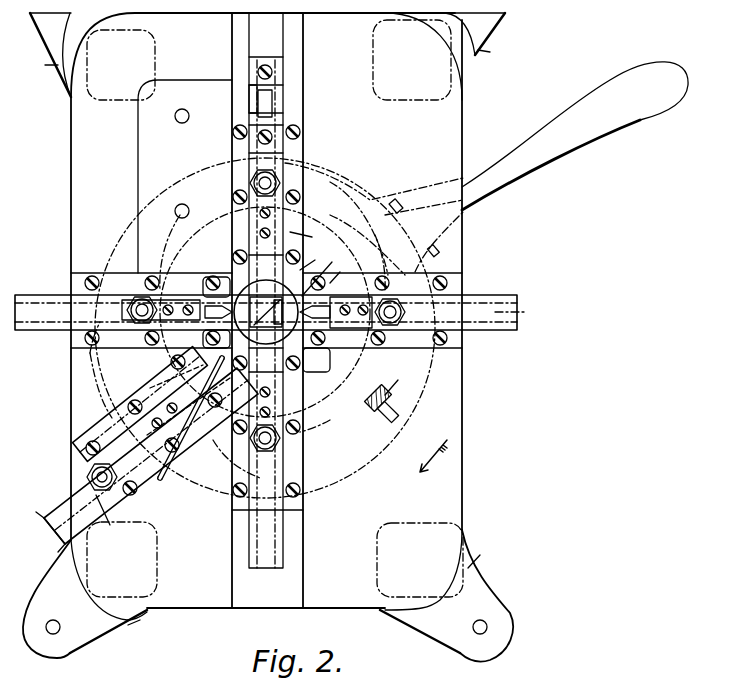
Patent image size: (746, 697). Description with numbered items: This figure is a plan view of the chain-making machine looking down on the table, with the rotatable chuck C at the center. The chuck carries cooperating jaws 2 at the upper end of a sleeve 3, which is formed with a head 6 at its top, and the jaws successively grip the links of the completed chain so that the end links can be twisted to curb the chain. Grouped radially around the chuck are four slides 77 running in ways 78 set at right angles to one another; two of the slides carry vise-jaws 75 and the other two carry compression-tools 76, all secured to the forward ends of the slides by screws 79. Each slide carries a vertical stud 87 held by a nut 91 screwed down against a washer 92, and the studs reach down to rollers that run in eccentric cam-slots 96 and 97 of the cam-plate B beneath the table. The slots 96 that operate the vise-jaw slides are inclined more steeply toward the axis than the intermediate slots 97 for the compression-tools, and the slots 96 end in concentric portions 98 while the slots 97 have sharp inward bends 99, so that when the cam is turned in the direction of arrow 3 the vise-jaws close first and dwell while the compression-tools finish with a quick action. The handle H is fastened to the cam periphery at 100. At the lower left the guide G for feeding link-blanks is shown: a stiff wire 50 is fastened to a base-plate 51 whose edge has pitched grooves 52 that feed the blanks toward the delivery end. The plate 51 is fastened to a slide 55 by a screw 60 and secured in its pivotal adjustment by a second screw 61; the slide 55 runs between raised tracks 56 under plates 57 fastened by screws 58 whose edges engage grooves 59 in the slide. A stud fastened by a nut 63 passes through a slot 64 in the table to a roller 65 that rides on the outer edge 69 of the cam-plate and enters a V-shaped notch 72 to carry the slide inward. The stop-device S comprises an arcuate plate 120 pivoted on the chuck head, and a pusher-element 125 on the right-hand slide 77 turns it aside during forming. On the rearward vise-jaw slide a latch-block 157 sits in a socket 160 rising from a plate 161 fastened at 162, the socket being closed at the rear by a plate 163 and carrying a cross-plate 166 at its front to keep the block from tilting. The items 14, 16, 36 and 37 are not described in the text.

The chuck-jaws 2 is at (266, 311).
The sleeve 3 is at (433, 456).
The head 6 is at (218, 303).
The guide block 14 is at (214, 301).
The pointed slide piece 16 is at (300, 314).
The hatched block 36 is at (392, 402).
The block plate 37 is at (388, 418).
The wire 50 is at (168, 470).
The base-plate 51 is at (180, 360).
The grooves 52 is at (160, 370).
The slide 55 is at (48, 531).
The tracks 56 is at (165, 500).
The plates 57 is at (168, 482).
The screws 58 is at (130, 496).
The grooves 59 is at (58, 552).
The screw 60 is at (150, 432).
The second screw 61 is at (88, 474).
The nut 63 is at (92, 482).
The slot 64 is at (171, 389).
The roller 65 is at (107, 518).
The outer edge 69 is at (92, 372).
The V-shaped notch 72 is at (125, 425).
The vise-jaws 75 is at (256, 290).
The compression-tools 76 is at (348, 303).
The slides 77 is at (30, 312).
The ways 78 is at (293, 590).
The screws 79 is at (272, 370).
The studs 87 is at (265, 450).
The nuts 91 is at (278, 445).
The washers 92 is at (280, 445).
The cam-slots 96 is at (330, 420).
The intermediate cam-slots 97 is at (378, 248).
The concentric portions 98 is at (335, 350).
The inward bends 99 is at (210, 335).
The handle fastening 100 is at (435, 252).
The arcuate-shaped plate 120 is at (333, 260).
The pusher-element 125 is at (315, 360).
The latch-block 157 is at (272, 100).
The socket 160 is at (250, 108).
The plate 161 is at (282, 60).
The fastening 162 is at (250, 140).
The plate 163 is at (250, 88).
The cross-plate 166 is at (278, 119).